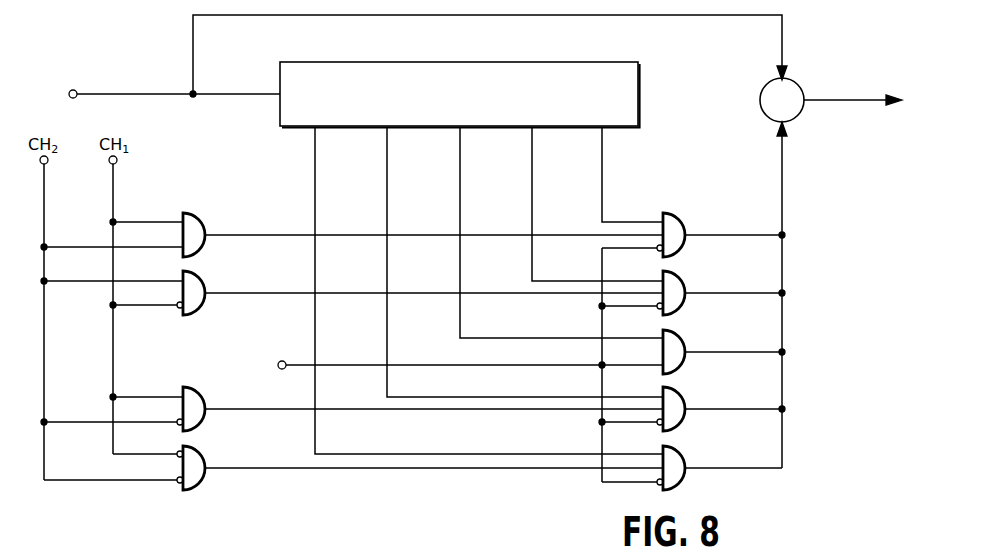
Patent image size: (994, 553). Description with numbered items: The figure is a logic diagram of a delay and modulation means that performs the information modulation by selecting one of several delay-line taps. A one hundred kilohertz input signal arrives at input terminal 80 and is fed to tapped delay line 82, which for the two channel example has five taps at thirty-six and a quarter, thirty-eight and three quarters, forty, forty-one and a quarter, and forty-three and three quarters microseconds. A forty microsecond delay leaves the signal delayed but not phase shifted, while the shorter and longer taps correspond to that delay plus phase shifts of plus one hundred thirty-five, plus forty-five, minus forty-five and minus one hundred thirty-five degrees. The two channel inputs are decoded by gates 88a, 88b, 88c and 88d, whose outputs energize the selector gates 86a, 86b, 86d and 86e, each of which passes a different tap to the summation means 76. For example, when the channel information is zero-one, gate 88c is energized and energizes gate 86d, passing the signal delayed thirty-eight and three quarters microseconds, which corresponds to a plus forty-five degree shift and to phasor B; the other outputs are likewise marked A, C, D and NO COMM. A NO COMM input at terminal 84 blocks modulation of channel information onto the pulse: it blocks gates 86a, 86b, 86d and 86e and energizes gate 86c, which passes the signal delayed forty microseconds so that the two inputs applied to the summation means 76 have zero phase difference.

The summation means 76 is at (803, 84).
The input terminal 80 is at (76, 90).
The tapped delay line 82 is at (641, 80).
The NO COMM terminal 84 is at (282, 361).
The gate 86a is at (676, 213).
The gate 86b is at (676, 271).
The gate 86c is at (676, 330).
The gate 86d is at (676, 387).
The gate 86e is at (676, 446).
The gate 88a is at (190, 212).
The gate 88b is at (184, 272).
The gate 88c is at (186, 387).
The gate 88d is at (183, 447).